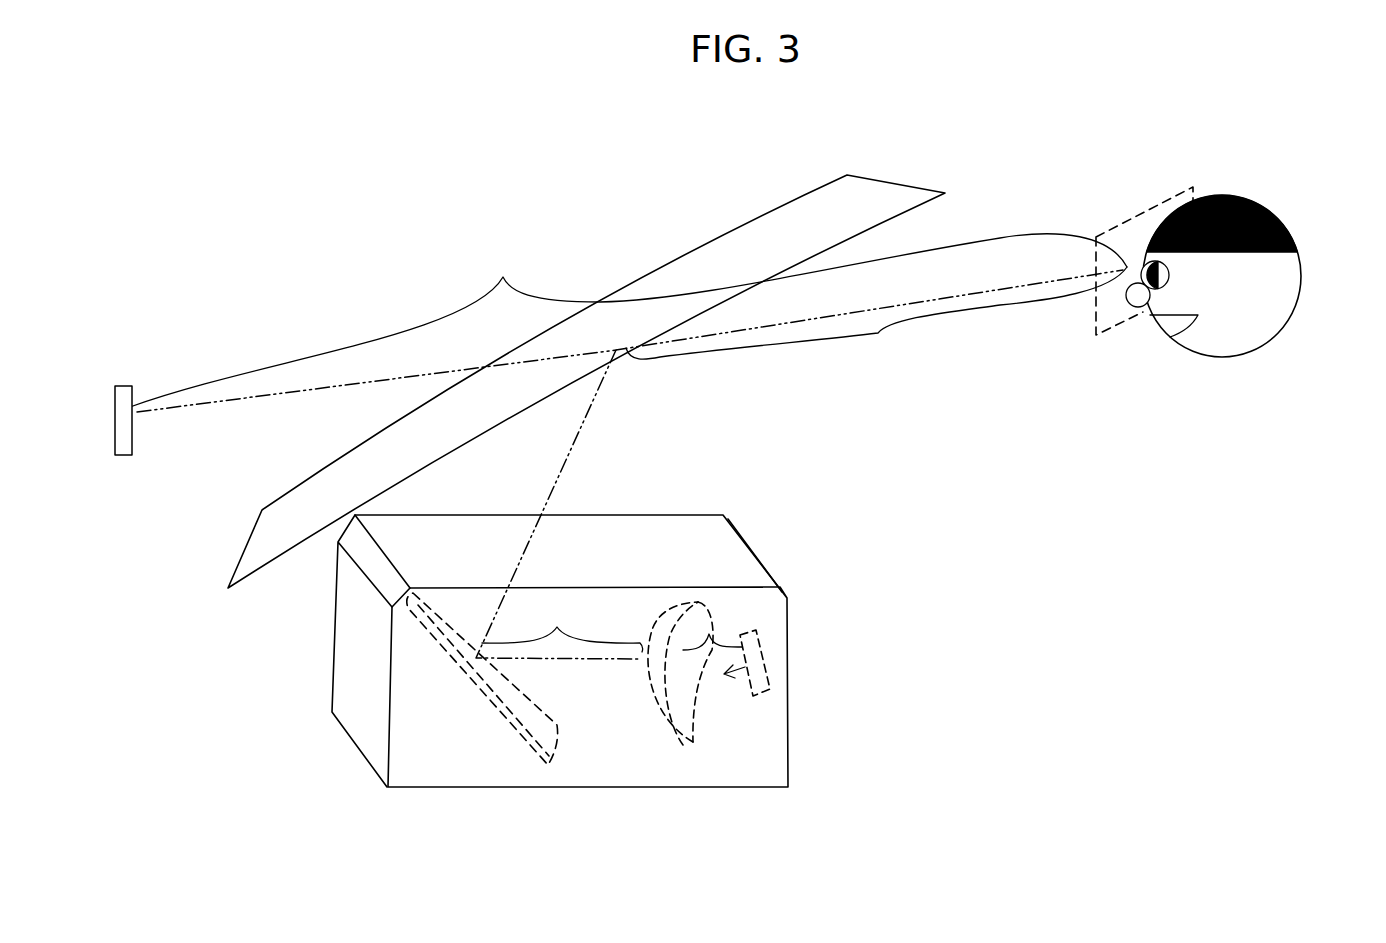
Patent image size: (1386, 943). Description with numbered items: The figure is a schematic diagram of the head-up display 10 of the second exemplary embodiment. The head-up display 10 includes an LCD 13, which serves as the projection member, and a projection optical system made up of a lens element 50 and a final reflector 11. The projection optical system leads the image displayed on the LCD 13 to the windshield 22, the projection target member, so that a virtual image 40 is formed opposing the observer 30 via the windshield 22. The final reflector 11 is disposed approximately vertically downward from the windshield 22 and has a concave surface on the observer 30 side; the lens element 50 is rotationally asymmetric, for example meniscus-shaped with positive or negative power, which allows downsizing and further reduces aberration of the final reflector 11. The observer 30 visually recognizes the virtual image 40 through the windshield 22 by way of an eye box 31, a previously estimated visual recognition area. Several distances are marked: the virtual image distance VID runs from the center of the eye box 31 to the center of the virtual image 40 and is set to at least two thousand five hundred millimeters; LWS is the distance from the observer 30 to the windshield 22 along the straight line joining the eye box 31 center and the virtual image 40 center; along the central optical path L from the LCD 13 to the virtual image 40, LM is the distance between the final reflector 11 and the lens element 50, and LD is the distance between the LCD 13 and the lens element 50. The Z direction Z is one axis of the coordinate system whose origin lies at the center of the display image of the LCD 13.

The head-up display 10 is at (312, 662).
The final reflector 11 is at (485, 715).
The LCD 13 is at (760, 645).
The windshield 22 is at (723, 265).
The observer 30 is at (1287, 222).
The eye box 31 is at (1143, 212).
The virtual image 40 is at (133, 455).
The lens element 50 is at (665, 607).
The virtual image distance VID is at (628, 320).
The distance from observer to windshield LWS is at (876, 324).
The central optical path L is at (588, 418).
The distance between final reflector and preceding optical element LM is at (562, 623).
The distance between LCD and preceding optical element LD is at (709, 634).
The Z-axis Z is at (727, 688).